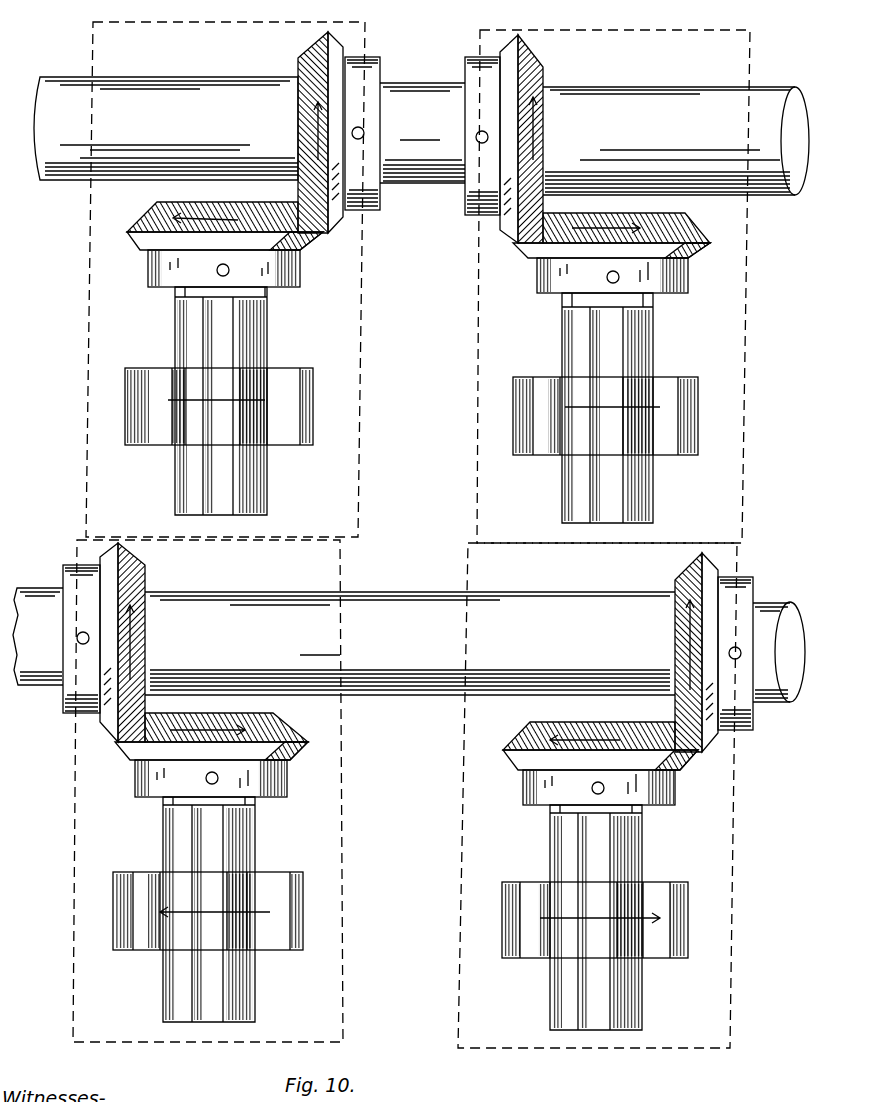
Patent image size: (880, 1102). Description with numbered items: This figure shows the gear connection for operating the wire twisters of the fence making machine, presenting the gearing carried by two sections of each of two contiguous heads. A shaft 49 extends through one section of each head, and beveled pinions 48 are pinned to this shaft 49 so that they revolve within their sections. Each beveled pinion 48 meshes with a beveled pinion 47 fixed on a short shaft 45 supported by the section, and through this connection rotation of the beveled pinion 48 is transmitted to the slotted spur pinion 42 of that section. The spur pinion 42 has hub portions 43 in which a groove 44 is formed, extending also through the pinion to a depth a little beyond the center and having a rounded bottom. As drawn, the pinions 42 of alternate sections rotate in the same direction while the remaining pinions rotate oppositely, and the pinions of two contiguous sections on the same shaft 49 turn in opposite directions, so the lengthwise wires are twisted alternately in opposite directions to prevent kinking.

The spur pinion 42 is at (420, 663).
The hub portions 43 is at (420, 737).
The groove 44 is at (408, 658).
The short shaft 45 is at (272, 297).
The beveled pinion 47 is at (415, 401).
The beveled pinion 48 is at (465, 72).
The shaft 49 is at (411, 389).